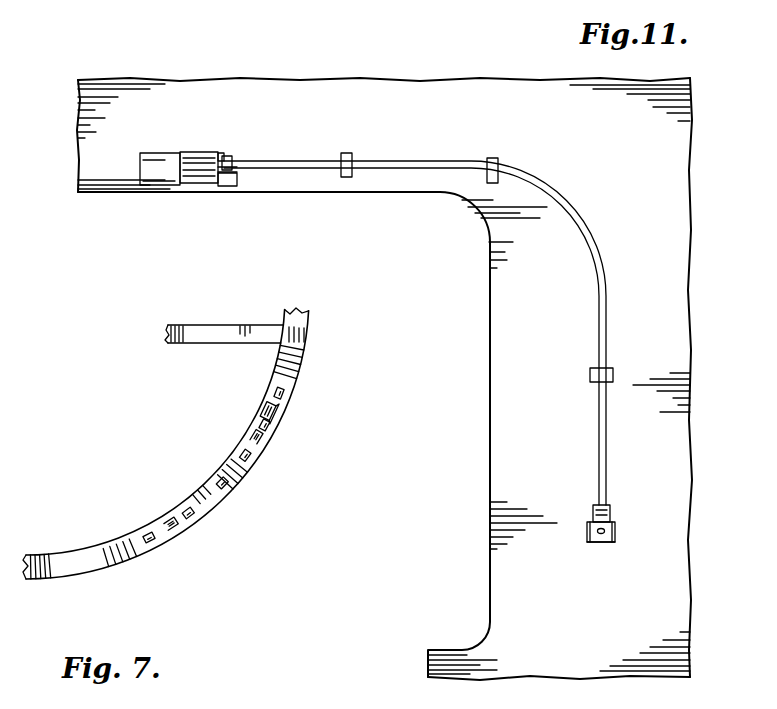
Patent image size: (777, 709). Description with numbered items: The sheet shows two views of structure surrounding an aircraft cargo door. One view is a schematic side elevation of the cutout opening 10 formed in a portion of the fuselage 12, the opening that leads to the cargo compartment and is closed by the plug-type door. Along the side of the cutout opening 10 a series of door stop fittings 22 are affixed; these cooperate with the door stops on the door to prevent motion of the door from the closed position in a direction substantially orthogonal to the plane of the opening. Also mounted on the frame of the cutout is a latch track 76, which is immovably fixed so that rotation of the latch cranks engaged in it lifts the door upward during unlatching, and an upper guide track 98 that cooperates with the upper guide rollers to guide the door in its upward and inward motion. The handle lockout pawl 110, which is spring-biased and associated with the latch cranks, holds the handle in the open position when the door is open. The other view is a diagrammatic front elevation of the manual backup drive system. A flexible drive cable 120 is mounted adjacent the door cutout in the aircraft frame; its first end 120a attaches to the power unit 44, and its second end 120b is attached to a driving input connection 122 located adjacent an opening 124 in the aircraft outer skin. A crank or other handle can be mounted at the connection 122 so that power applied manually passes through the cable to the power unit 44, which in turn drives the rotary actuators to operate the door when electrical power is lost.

In FIG. 11, the cutout opening 10 is at (490, 578).
In FIG. 11, the fuselage 12 is at (665, 157).
In FIG. 7, the fuselage 12 is at (290, 319).
In FIG. 7, the door stop fittings 22 is at (270, 427).
In FIG. 11, the power unit 44 is at (161, 153).
In FIG. 7, the latch track 76 is at (268, 440).
In FIG. 7, the upper guide track 98 is at (258, 408).
In FIG. 7, the handle lockout pawl 110 is at (178, 528).
In FIG. 11, the flexible drive cable 120 is at (612, 278).
In FIG. 11, the first end of the flexible drive cable 120a is at (224, 157).
In FIG. 11, the second end of the flexible drive cable 120b is at (604, 503).
In FIG. 11, the driving input connection 122 is at (615, 531).
In FIG. 11, the opening in the aircraft outer skin 124 is at (592, 543).